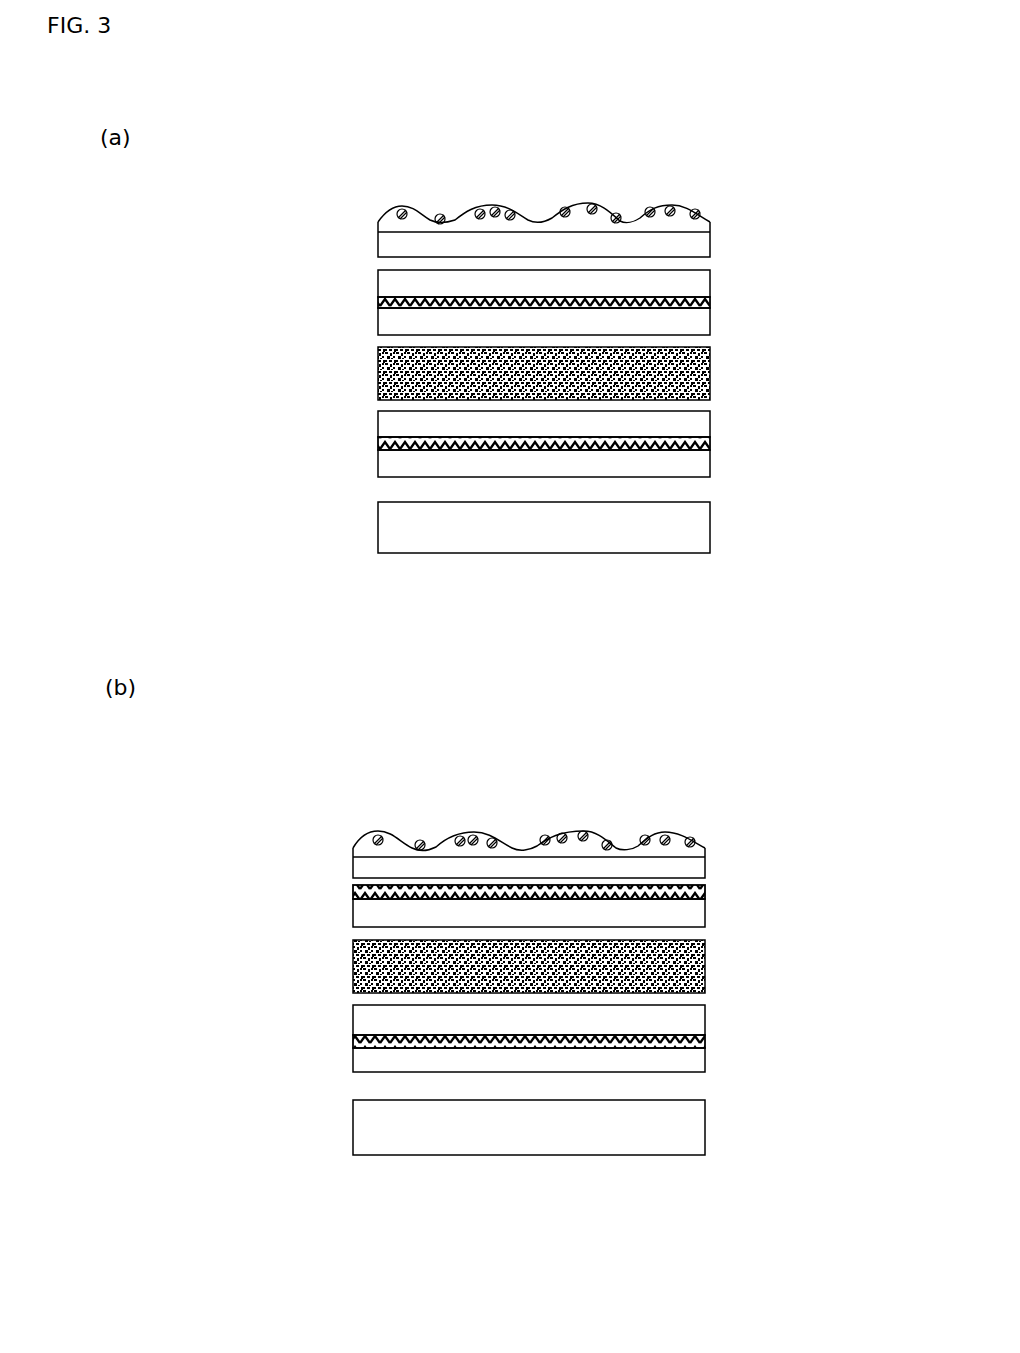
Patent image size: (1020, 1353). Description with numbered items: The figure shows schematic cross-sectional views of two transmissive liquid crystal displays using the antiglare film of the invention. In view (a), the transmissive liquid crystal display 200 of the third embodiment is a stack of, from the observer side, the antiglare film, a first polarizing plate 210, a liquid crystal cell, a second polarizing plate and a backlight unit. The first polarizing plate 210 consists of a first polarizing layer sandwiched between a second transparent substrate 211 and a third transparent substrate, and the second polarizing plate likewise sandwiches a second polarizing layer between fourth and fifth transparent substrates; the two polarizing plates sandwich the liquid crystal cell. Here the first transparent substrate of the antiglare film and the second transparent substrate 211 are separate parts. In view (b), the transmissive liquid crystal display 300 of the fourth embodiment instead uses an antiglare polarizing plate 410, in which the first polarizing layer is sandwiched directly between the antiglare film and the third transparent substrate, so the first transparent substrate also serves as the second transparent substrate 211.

The transmissive liquid crystal display 200 is at (565, 129).
The first polarizing plate 210 is at (725, 270).
The second transparent substrate 211 is at (392, 282).
The transmissive liquid crystal display 300 is at (552, 701).
The antiglare polarizing plate 410 is at (795, 840).